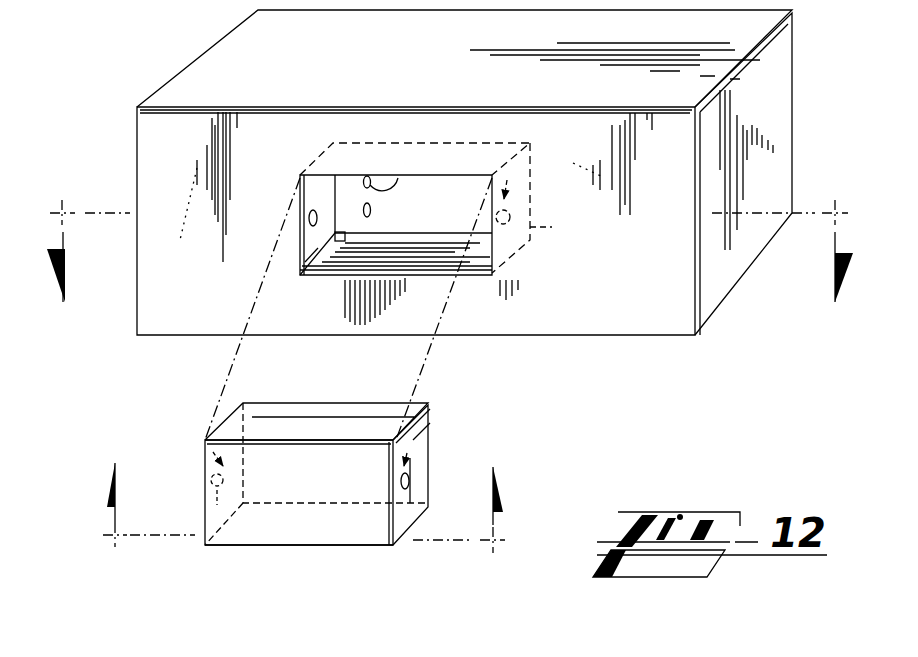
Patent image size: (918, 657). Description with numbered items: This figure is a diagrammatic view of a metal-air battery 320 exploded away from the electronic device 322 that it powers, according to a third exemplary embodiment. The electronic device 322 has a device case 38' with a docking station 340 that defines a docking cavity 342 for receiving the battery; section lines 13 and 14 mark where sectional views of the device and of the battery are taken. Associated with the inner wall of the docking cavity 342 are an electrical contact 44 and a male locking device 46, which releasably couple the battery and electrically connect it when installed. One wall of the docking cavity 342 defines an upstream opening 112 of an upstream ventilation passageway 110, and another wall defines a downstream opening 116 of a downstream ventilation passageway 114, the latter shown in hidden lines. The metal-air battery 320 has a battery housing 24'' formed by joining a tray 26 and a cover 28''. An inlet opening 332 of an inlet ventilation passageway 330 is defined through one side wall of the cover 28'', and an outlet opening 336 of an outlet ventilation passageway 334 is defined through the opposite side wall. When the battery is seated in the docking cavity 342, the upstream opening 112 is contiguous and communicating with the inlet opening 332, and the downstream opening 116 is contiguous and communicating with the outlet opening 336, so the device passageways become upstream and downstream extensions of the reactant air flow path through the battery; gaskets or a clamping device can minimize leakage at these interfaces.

The electronic device 322 is at (73, 121).
The device case 38' is at (404, 179).
The section line 13- 13 is at (450, 238).
The section line 14- 14 is at (304, 524).
The docking station 340 is at (428, 175).
The docking cavity 342 is at (472, 188).
The male locking device 46 is at (371, 210).
The electrical contact 44 is at (346, 234).
The upstream ventilation passageway 110 is at (320, 198).
The upstream opening 112 is at (300, 262).
The downstream ventilation passageway 114 is at (536, 164).
The downstream opening 116 is at (552, 227).
The metal-air battery 320 is at (223, 580).
The tray 26 is at (333, 403).
The battery housing 24'' is at (299, 536).
The cover 28'' is at (331, 597).
The inlet ventilation passageway 330 is at (203, 440).
The inlet opening 332 is at (207, 513).
The outlet ventilation passageway 334 is at (410, 448).
The outlet opening 336 is at (406, 502).